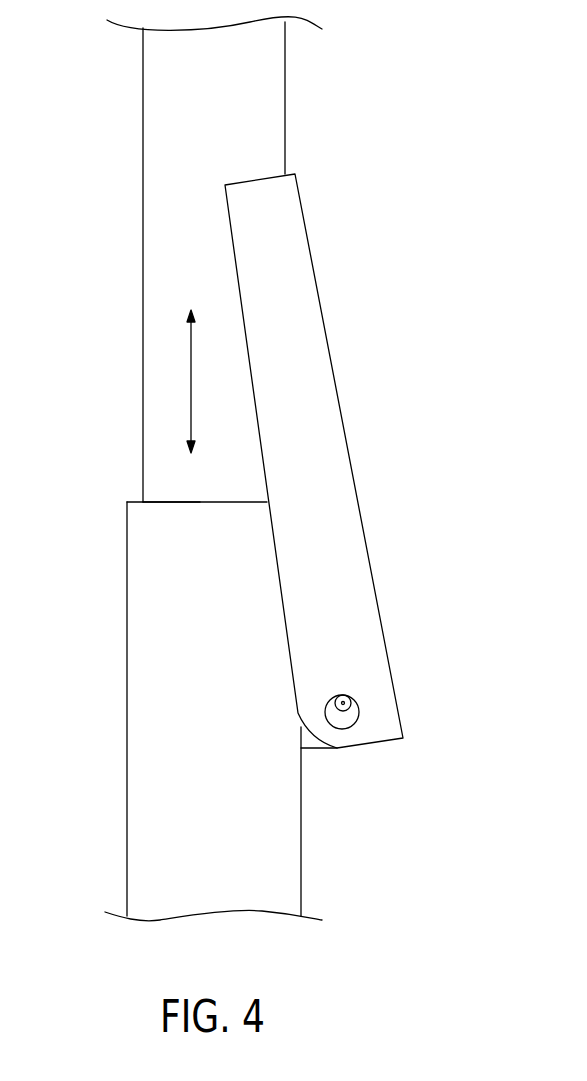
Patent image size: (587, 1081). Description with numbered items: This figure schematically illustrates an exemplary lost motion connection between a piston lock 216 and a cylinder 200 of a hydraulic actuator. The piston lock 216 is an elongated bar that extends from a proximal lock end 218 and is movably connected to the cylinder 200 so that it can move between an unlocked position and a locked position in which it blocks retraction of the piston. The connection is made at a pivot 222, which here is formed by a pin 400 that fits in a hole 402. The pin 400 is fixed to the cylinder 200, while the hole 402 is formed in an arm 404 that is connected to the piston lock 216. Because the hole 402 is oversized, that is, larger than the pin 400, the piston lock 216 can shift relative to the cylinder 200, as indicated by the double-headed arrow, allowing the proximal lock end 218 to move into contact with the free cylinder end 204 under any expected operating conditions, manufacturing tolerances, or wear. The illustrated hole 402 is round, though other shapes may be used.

The cylinder 200 is at (165, 687).
The free cylinder end 204 is at (160, 503).
The piston lock 216 is at (185, 152).
The proximal lock end 218 is at (177, 502).
The pivot 222 is at (352, 693).
The pin 400 is at (350, 704).
The hole 402 is at (345, 720).
The arm 404 is at (308, 403).